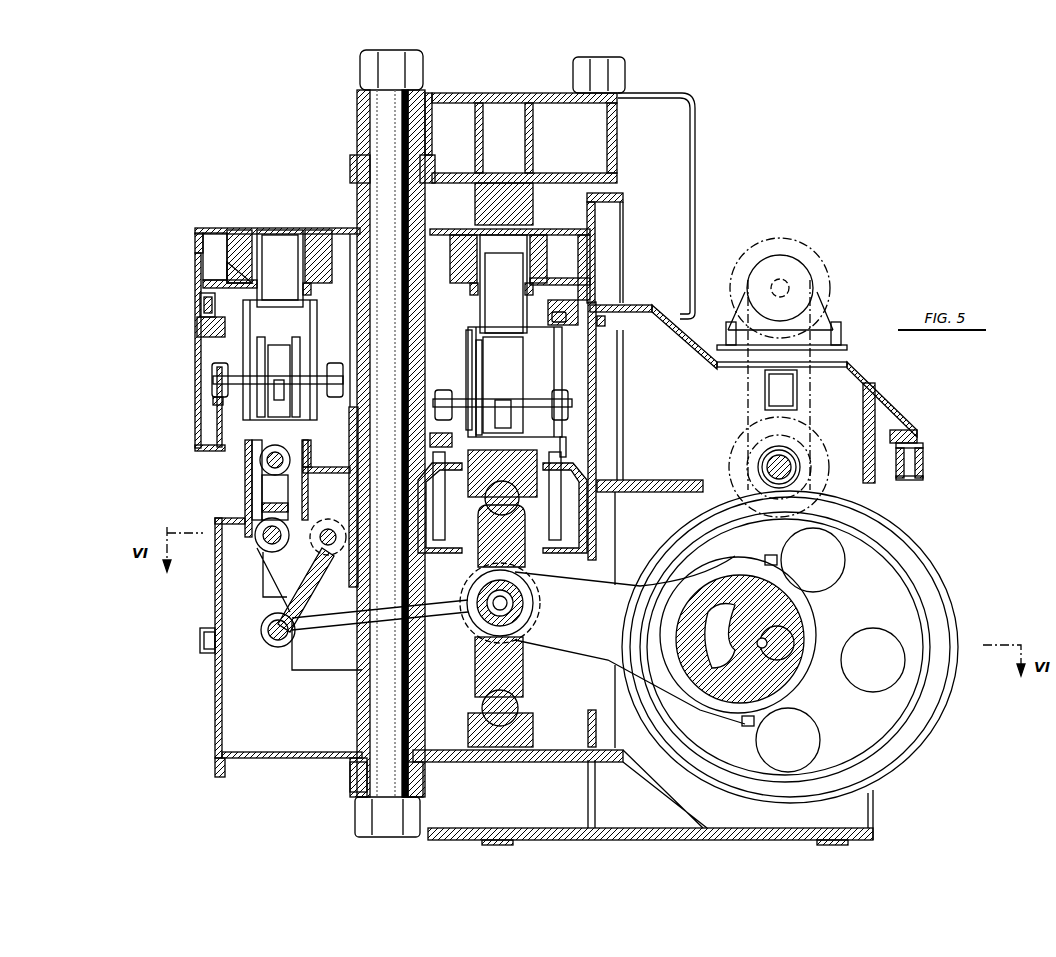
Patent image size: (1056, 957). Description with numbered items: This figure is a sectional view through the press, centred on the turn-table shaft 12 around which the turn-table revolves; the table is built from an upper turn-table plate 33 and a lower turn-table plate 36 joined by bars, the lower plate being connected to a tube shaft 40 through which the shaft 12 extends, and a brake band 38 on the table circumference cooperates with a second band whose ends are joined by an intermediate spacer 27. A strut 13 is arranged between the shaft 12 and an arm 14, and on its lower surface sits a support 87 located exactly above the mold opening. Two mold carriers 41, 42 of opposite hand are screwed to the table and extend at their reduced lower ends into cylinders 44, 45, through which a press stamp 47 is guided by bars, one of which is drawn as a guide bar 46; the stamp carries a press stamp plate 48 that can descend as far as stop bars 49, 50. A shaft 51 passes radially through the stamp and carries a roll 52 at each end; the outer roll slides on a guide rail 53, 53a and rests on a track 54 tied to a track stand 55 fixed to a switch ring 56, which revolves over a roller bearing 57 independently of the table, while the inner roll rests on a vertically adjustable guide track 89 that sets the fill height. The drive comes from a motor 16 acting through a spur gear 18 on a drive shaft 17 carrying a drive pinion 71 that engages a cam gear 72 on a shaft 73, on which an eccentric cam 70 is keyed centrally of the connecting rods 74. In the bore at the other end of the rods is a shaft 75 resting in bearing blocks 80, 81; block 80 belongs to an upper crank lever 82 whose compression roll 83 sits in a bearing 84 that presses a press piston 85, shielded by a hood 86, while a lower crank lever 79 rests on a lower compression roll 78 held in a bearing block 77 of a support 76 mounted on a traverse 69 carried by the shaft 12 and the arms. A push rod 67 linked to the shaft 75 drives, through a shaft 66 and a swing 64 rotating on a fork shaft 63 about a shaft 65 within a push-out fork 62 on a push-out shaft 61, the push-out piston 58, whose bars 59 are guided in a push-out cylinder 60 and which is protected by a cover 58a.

The turn-table shaft 12 is at (385, 132).
The strut 13 is at (540, 138).
The arm 14 is at (627, 110).
The motor 16 is at (826, 291).
The drive shaft 17 is at (757, 459).
The spur gear 18 is at (815, 431).
The intermediate spacer 27 is at (600, 222).
The upper turn-table plate 33 is at (240, 232).
The lower turn-table plate 36 is at (205, 285).
The brake band 38 is at (195, 242).
The tube shaft 40 is at (357, 225).
The mold carrier 41 is at (245, 230).
The mold carrier 42 is at (323, 230).
The cylinder 44 is at (250, 353).
The cylinder 45 is at (310, 361).
The guide bar 46 is at (305, 348).
The press stamp 47 is at (298, 401).
The press stamp plate 48 is at (493, 256).
The stop bar 49 is at (262, 286).
The stop bar 50 is at (305, 290).
The shaft 51 is at (245, 390).
The roll 52 is at (210, 372).
The guide rail 53 is at (600, 423).
The guide rail 53a is at (215, 398).
The track 54 is at (217, 431).
The track stand 55 is at (198, 413).
The switch ring 56 is at (203, 306).
The roller bearing 57 is at (200, 326).
The push-out piston 58 is at (245, 453).
The cover 58a is at (315, 446).
The bar 59 is at (247, 478).
The push-out cylinder 60 is at (245, 493).
The push-out shaft 61 is at (305, 463).
The push-out fork 62 is at (290, 513).
The fork shaft 63 is at (258, 546).
The swing 64 is at (275, 576).
The shaft 65 is at (336, 553).
The shaft 66 is at (277, 645).
The push rod 67 is at (345, 630).
The traverse 69 is at (542, 762).
The eccentric cam 70 is at (770, 701).
The drive pinion 71 is at (800, 461).
The cam gear 72 is at (906, 593).
The shaft 73 is at (795, 638).
The connecting rod 74 is at (612, 648).
The shaft 75 is at (538, 604).
The support 76 is at (482, 762).
The bearing block 77 is at (535, 723).
The lower compression roll 78 is at (520, 701).
The lower crank lever 79 is at (478, 673).
The bearing block 80 is at (535, 591).
The bearing block 81 is at (535, 621).
The upper crank lever 82 is at (482, 548).
The compression roll 83 is at (520, 501).
The bearing 84 is at (541, 479).
The press piston 85 is at (484, 476).
The hood 86 is at (430, 474).
The support 87 is at (527, 210).
The guide track 89 is at (445, 437).